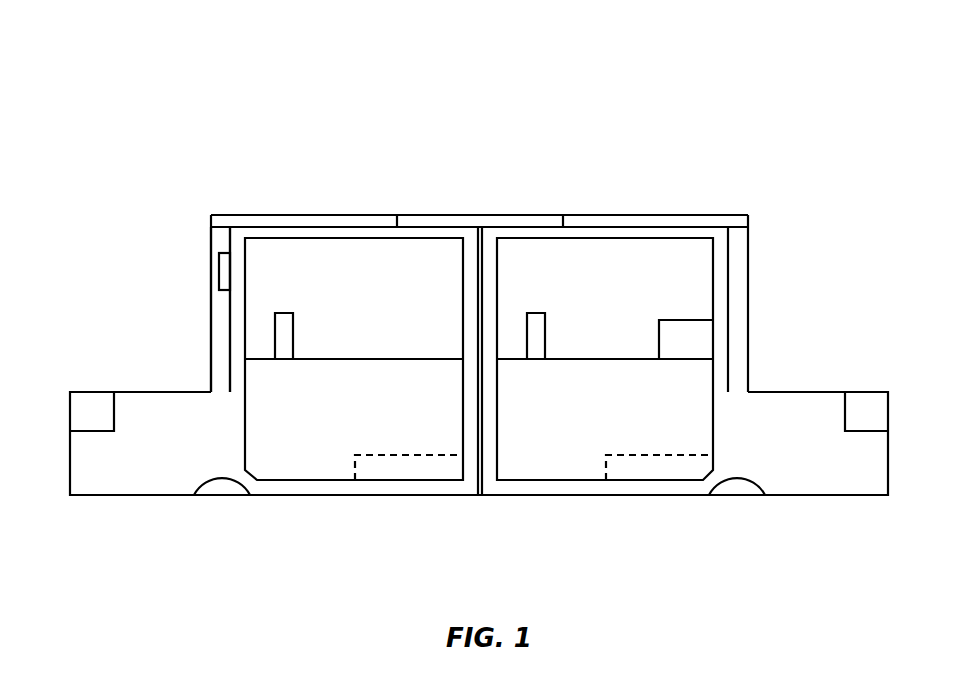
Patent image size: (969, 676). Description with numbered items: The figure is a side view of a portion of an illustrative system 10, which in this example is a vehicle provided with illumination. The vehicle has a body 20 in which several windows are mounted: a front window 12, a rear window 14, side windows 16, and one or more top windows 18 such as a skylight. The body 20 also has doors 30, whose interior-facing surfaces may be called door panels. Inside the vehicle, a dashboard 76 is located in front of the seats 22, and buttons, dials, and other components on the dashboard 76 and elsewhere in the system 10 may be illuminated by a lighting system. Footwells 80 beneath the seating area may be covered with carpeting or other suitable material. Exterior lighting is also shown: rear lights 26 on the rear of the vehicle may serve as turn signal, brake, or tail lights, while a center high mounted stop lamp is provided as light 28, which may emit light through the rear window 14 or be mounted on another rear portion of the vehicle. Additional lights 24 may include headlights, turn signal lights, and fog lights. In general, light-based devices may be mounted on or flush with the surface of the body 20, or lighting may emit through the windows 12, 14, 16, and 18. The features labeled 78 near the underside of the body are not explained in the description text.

The system 10 is at (734, 73).
The front window 12 is at (740, 262).
The rear window 14 is at (216, 328).
The side windows 16 is at (322, 252).
The top windows 18 is at (468, 222).
The body 20 is at (148, 484).
The seats 22 is at (288, 328).
The lights 24 is at (878, 410).
The rear lights 26 is at (69, 410).
The light 28 is at (224, 272).
The doors 30 is at (312, 473).
The dashboard 76 is at (705, 336).
The recess 78 is at (222, 488).
The footwells 80 is at (408, 473).